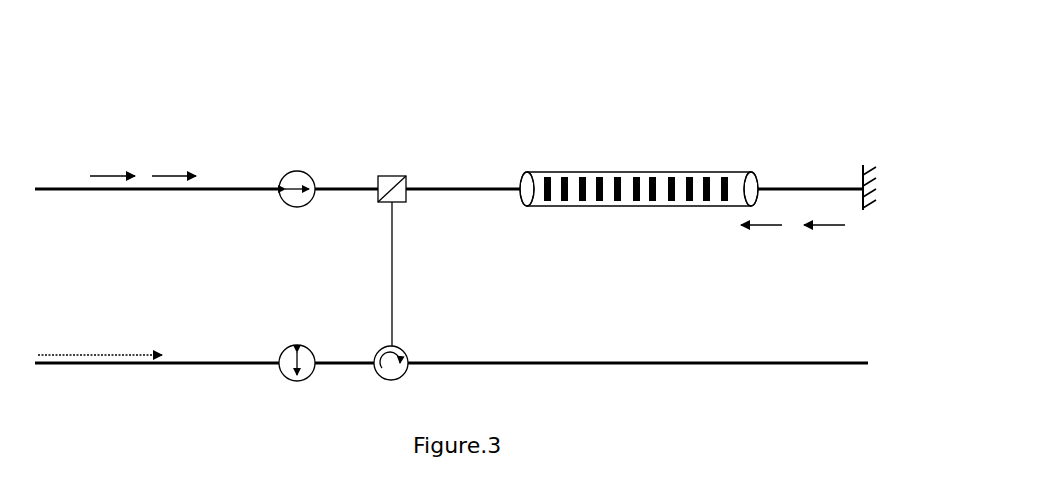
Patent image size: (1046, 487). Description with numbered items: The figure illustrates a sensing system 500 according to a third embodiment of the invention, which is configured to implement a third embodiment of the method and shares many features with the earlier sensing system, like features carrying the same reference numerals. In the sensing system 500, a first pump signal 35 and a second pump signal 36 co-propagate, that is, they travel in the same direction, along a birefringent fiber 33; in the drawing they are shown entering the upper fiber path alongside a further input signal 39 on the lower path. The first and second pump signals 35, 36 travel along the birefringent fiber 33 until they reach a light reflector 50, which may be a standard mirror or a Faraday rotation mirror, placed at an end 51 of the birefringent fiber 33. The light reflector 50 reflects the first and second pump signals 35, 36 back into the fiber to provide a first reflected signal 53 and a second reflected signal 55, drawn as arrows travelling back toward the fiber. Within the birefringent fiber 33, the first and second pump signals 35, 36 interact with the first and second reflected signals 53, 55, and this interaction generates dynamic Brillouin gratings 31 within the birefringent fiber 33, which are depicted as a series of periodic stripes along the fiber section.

The sensing system 500 is at (749, 106).
The first pump signal 35 is at (112, 173).
The second pump signal 36 is at (165, 173).
The signal light 39 is at (114, 352).
The dynamic Brillouin gratings 31 is at (641, 184).
The birefringent fiber 33 is at (538, 178).
The end of the birefringent fiber 51 is at (753, 182).
The light reflector 50 is at (861, 164).
The first reflected signal 53 is at (768, 234).
The second reflected signal 55 is at (818, 234).